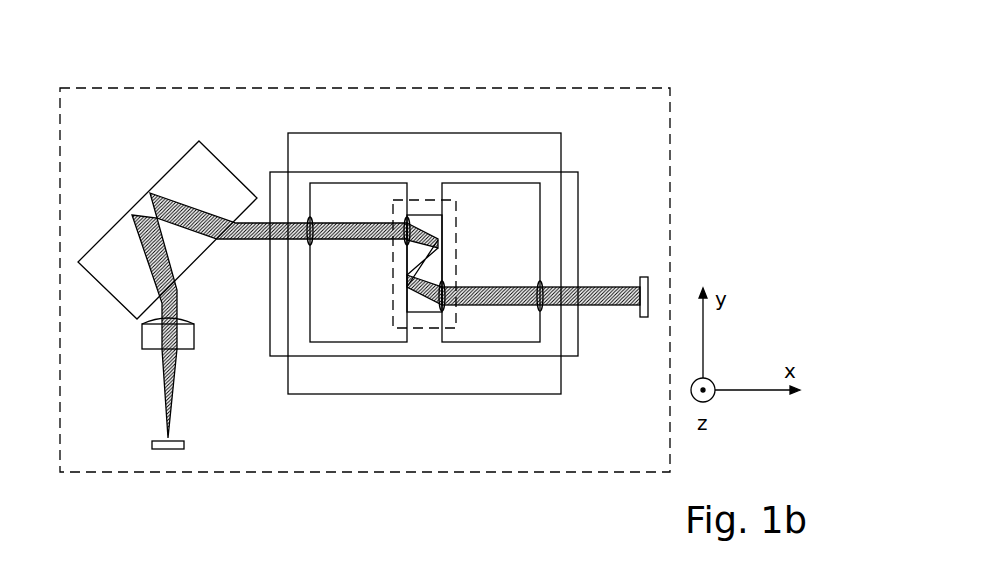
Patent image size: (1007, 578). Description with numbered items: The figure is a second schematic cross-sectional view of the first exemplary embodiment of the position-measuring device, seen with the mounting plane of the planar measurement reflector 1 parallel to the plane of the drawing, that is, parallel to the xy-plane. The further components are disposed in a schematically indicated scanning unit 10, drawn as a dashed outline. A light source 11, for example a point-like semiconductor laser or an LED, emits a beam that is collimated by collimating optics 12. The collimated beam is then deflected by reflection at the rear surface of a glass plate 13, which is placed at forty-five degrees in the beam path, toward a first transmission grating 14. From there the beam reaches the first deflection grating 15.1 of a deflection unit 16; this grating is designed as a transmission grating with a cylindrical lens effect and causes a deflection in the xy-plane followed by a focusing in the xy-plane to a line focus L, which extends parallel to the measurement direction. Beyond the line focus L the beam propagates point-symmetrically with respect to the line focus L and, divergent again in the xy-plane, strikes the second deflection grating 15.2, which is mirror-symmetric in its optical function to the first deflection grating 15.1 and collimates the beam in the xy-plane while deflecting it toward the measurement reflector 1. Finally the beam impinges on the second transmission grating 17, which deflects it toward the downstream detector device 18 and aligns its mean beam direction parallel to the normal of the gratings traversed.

The planar measurement reflector 1 is at (572, 214).
The scanning unit 10 is at (503, 88).
The light source 11 is at (152, 445).
The collimating optics 12 is at (142, 337).
The glass plate 13 is at (186, 167).
The first transmission grating 14 is at (312, 238).
The first deflection grating 15.1 is at (405, 222).
The second deflection grating 15.2 is at (450, 290).
The deflection unit 16 is at (427, 330).
The second transmission grating 17 is at (536, 304).
The detector device 18 is at (645, 320).
The line focus L is at (430, 258).